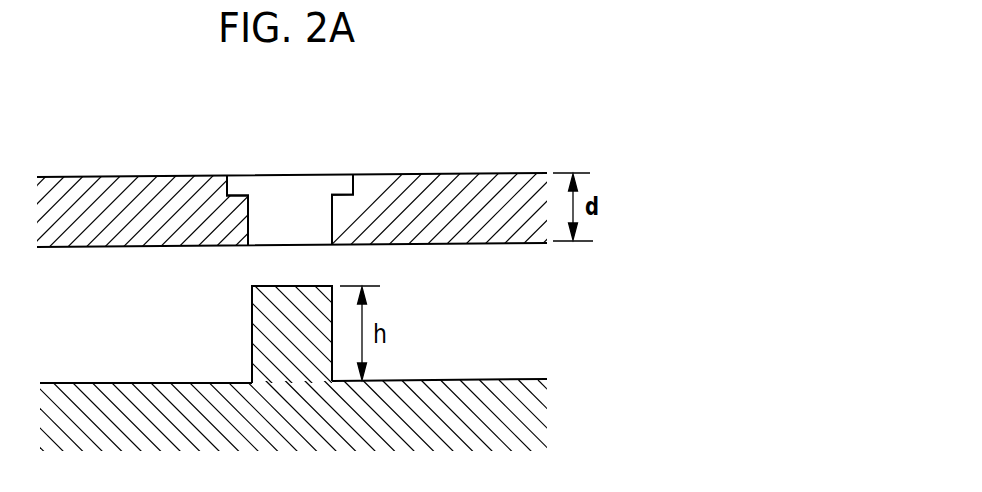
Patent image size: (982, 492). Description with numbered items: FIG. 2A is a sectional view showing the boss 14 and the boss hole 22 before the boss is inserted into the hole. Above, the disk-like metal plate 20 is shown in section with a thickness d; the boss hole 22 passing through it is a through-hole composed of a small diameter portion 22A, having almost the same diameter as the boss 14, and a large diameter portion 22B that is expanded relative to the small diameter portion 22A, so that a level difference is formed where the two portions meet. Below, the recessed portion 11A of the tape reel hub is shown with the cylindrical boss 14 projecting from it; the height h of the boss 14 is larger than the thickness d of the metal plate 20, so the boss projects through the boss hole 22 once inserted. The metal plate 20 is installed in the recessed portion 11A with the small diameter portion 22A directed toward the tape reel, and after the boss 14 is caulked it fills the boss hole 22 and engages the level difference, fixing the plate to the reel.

The metal plate 20 is at (86, 196).
The boss hole 22 is at (742, 93).
The small diameter portion 22A is at (332, 219).
The large diameter portion 22B is at (352, 192).
The recessed portion 11A is at (93, 392).
The boss 14 is at (262, 333).